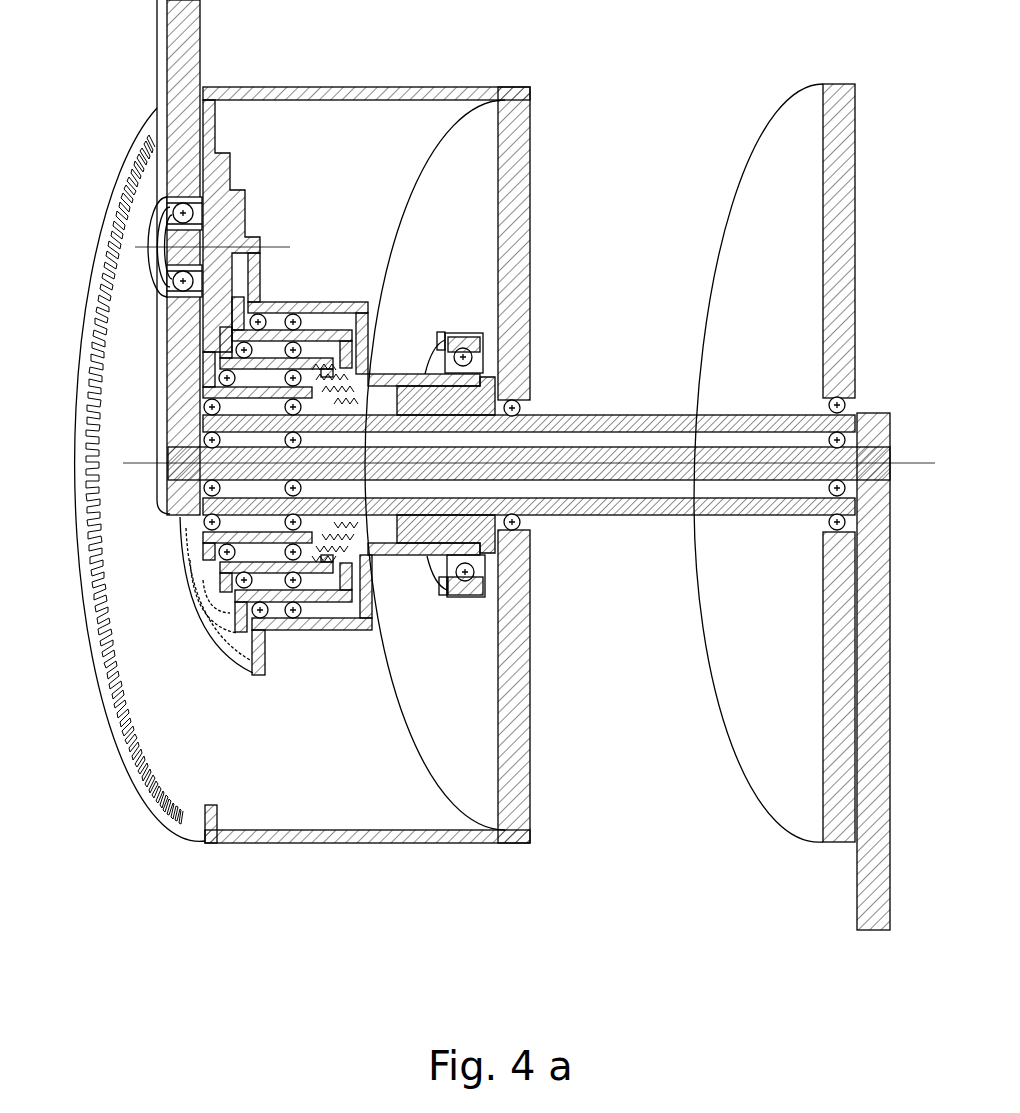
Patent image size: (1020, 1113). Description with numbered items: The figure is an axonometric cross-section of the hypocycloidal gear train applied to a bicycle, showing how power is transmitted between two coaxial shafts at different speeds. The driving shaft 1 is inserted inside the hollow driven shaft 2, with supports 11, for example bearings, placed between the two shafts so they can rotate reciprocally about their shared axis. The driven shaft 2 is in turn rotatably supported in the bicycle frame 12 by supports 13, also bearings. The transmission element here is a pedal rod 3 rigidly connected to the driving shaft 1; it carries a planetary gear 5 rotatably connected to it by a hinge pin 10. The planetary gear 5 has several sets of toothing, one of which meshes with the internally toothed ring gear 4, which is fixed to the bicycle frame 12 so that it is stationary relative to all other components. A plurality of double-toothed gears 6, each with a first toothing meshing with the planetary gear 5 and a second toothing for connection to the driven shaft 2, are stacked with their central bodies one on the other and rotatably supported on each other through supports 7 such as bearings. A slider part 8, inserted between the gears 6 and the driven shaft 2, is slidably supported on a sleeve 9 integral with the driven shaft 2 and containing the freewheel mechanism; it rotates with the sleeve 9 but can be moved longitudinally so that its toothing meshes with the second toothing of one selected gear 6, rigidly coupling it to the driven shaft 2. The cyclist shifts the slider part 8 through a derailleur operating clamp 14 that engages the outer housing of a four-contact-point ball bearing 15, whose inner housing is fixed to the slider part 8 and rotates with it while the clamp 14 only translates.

The driving shaft 1 is at (620, 457).
The driven shaft 2 is at (603, 414).
The pedal rod 3 is at (185, 55).
The ring gear 4 is at (142, 148).
The planetary gear 5 is at (252, 210).
The gears 6 is at (283, 297).
The supports 7 is at (298, 338).
The slider part 8 is at (404, 370).
The sleeve 9 is at (480, 397).
The hinge pin 10 is at (168, 207).
The supports 11 is at (857, 410).
The bicycle frame 12 is at (469, 251).
The supports 13 is at (845, 410).
The operating clamp 14 is at (468, 331).
The ball bearing 15 is at (480, 348).